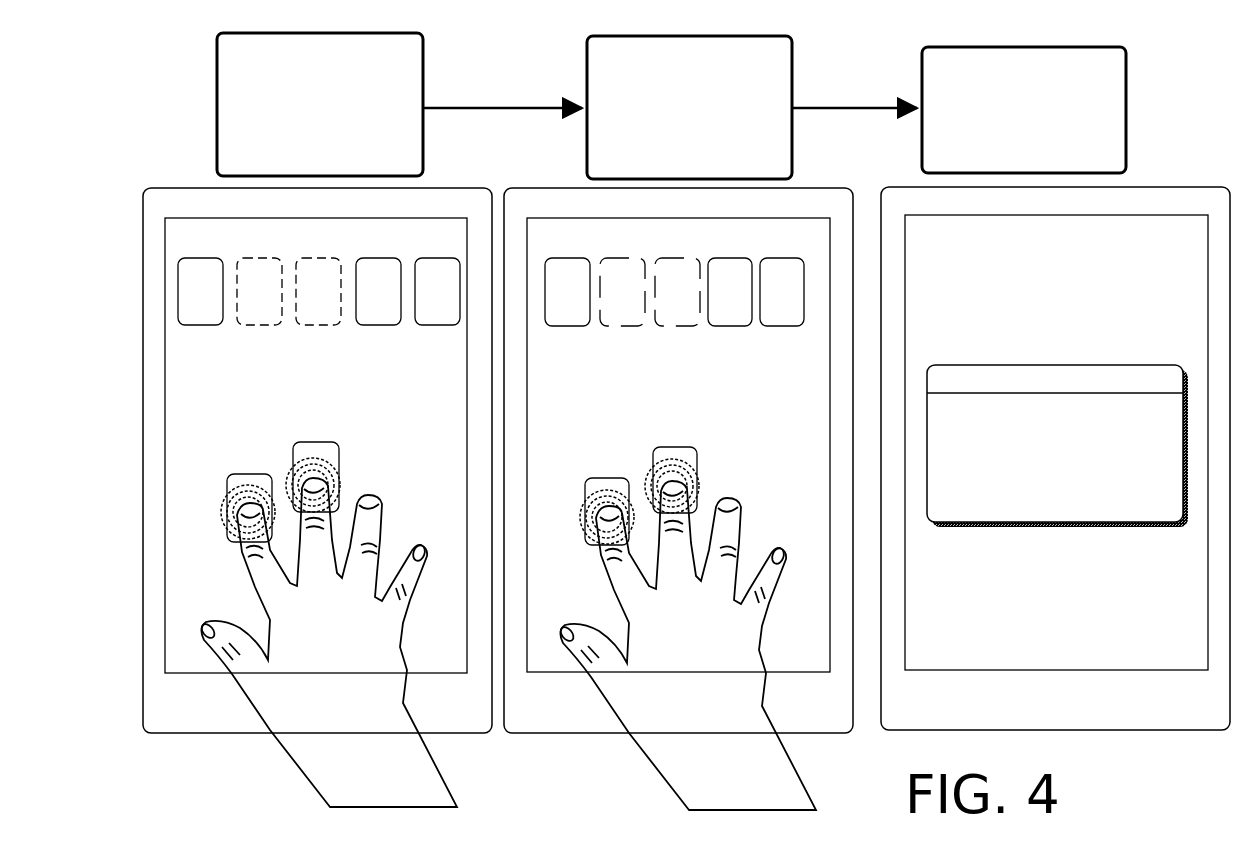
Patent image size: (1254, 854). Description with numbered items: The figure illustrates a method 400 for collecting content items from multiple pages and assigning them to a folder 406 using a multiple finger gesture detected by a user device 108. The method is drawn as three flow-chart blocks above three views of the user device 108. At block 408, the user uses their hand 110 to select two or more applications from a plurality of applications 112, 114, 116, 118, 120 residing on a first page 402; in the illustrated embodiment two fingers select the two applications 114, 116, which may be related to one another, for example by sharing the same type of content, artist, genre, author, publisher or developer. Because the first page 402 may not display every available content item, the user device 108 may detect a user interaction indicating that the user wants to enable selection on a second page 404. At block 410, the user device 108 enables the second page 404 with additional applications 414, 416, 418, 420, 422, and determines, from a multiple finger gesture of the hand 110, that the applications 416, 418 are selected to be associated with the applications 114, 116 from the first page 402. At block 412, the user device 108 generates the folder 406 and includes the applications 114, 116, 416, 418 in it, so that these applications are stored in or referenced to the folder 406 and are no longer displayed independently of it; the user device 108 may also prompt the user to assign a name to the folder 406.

The user device 108 is at (205, 185).
The hand 110 is at (305, 776).
The application 112 is at (200, 314).
The application 114 is at (250, 434).
The application 116 is at (316, 398).
The application 118 is at (378, 314).
The application 120 is at (437, 314).
The method 400 is at (1155, 74).
The first page 402 is at (440, 680).
The second page 404 is at (790, 680).
The folder 406 is at (1086, 530).
The block 408 is at (320, 104).
The block 410 is at (689, 107).
The block 412 is at (1024, 110).
The application 414 is at (567, 314).
The application 416 is at (607, 438).
The application 418 is at (673, 400).
The application 420 is at (730, 314).
The application 422 is at (782, 314).